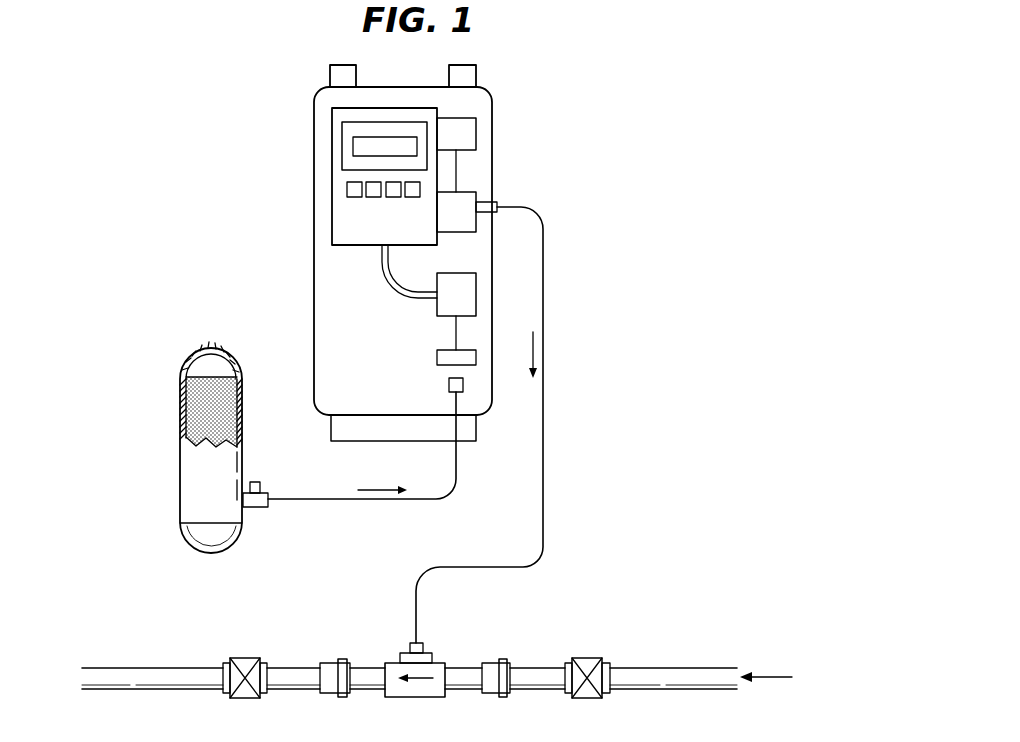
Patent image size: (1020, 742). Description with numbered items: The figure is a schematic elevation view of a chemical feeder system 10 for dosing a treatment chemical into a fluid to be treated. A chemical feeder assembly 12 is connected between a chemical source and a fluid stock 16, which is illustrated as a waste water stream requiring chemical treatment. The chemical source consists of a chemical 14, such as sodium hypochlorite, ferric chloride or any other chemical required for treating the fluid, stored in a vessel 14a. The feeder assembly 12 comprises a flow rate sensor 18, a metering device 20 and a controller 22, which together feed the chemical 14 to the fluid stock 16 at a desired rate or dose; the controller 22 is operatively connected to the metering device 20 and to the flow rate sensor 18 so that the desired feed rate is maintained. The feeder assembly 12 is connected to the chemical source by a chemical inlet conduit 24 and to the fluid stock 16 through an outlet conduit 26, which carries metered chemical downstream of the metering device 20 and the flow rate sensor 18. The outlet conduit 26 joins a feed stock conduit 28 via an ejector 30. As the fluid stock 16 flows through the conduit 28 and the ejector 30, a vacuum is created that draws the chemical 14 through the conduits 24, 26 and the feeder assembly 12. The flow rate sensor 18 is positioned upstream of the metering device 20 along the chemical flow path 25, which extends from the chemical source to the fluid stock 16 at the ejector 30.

The chemical feeder system 10 is at (622, 224).
The chemical feeder assembly 12 is at (280, 130).
The chemical 14 is at (200, 406).
The vessel 14a is at (196, 487).
The fluid stock 16 is at (778, 677).
The flow rate sensor 18 is at (450, 300).
The metering device 20 is at (471, 185).
The controller 22 is at (320, 187).
The chemical inlet conduit 24 is at (320, 499).
The chemical flow path 25 is at (570, 419).
The outlet conduit 26 is at (545, 480).
The feed stock conduit 28 is at (700, 668).
The ejector 30 is at (395, 656).